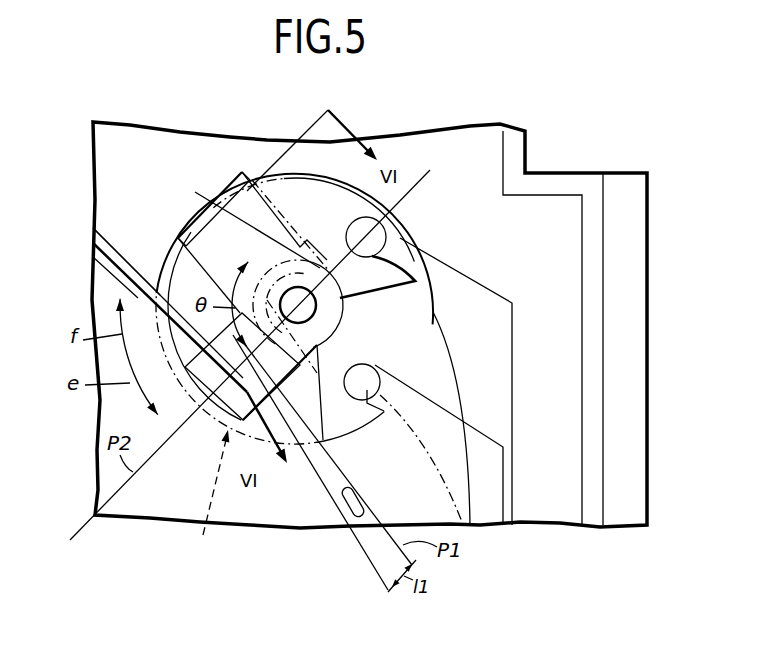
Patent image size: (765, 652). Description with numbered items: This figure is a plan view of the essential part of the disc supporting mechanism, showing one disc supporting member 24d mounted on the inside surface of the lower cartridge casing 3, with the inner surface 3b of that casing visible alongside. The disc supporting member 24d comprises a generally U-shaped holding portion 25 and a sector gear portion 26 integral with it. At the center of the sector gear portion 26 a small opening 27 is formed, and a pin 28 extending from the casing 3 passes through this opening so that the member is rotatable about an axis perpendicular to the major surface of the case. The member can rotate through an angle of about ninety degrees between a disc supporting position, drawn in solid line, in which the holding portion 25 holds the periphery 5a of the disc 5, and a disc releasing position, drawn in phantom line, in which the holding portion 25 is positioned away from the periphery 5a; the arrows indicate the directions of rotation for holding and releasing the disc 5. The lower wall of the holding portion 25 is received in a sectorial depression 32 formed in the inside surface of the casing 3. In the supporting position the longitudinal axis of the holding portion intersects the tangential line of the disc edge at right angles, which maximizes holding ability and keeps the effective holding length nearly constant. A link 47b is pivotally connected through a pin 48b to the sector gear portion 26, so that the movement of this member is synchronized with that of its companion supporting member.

The lower cartridge casing 3 is at (481, 126).
The inner surface of the lower cartridge casing 3b is at (542, 208).
The disc 5 is at (130, 498).
The periphery of the disc 5a is at (324, 500).
The disc supporting member 24d is at (198, 496).
The holding portion 25 is at (243, 218).
The sector gear portion 26 is at (280, 185).
The small opening 27 is at (340, 293).
The pin 28 is at (318, 311).
The sectorial depression 32 is at (168, 260).
The link 47b is at (497, 482).
The pin 48b is at (368, 238).